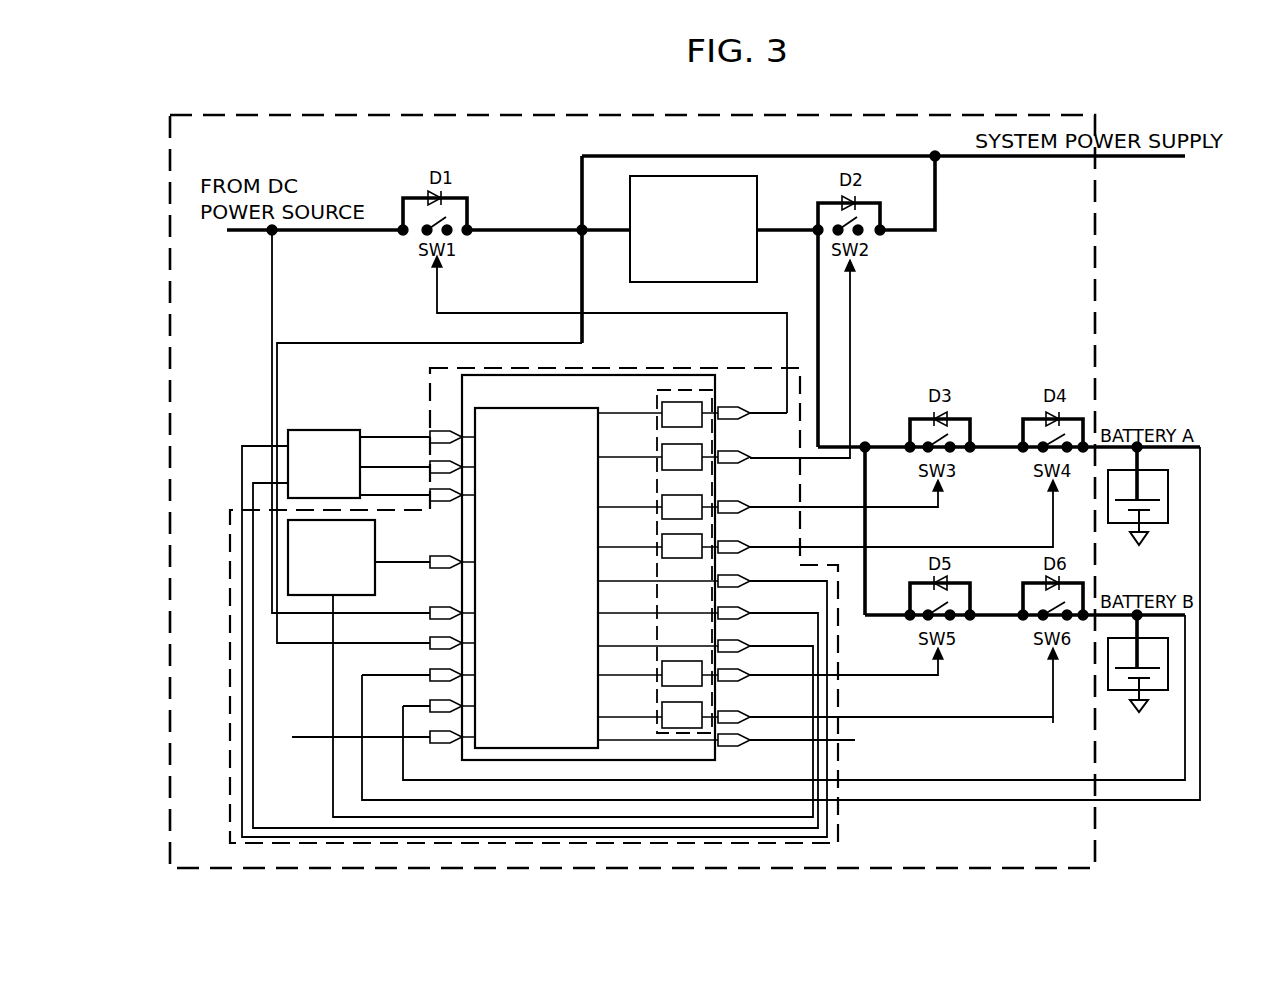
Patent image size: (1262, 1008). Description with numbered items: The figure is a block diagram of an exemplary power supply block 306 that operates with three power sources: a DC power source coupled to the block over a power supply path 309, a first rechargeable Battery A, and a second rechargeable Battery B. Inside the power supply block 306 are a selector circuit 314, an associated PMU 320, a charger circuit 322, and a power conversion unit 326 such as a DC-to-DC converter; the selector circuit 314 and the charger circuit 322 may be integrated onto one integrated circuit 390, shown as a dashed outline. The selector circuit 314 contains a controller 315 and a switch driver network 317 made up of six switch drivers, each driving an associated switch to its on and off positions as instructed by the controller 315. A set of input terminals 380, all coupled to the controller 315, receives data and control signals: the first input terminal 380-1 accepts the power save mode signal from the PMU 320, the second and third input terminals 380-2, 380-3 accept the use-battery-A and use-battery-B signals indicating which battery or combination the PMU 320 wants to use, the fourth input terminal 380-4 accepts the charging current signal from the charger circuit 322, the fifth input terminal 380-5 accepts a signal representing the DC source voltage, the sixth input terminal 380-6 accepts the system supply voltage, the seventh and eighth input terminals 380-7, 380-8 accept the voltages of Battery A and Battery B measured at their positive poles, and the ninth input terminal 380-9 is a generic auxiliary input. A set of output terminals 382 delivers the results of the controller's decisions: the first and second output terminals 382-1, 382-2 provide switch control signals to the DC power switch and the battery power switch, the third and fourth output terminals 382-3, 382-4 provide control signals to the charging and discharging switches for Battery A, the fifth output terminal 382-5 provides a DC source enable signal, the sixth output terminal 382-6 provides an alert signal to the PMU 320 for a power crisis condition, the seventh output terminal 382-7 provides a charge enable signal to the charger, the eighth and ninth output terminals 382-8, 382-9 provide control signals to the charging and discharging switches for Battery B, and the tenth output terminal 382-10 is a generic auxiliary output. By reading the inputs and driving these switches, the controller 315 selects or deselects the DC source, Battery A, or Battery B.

The power supply block 306 is at (512, 115).
The power supply path 309 is at (490, 230).
The selector circuit 314 is at (604, 372).
The controller 315 is at (537, 748).
The switch driver network 317 is at (657, 717).
The PMU 320 is at (338, 430).
The charger circuit 322 is at (330, 597).
The power conversion unit 326 is at (630, 218).
The input terminals 380 is at (744, 567).
The first input terminal 380-1 is at (435, 432).
The second input terminal 380-2 is at (437, 462).
The third input terminal 380-3 is at (452, 492).
The fourth input terminal 380-4 is at (450, 566).
The fifth input terminal 380-5 is at (450, 616).
The sixth input terminal 380-6 is at (450, 646).
The seventh input terminal 380-7 is at (450, 678).
The eighth input terminal 380-8 is at (450, 710).
The ninth input terminal 380-9 is at (430, 740).
The output terminals 382 is at (688, 624).
The first output terminal 382-1 is at (748, 412).
The second output terminal 382-2 is at (728, 452).
The third output terminal 382-3 is at (728, 503).
The fourth output terminal 382-4 is at (728, 543).
The fifth output terminal 382-5 is at (728, 578).
The sixth output terminal 382-6 is at (728, 609).
The seventh output terminal 382-7 is at (728, 642).
The eighth output terminal 382-8 is at (728, 671).
The ninth output terminal 382-9 is at (728, 713).
The tenth output terminal 382-10 is at (737, 744).
The integrated circuit 390 is at (375, 843).